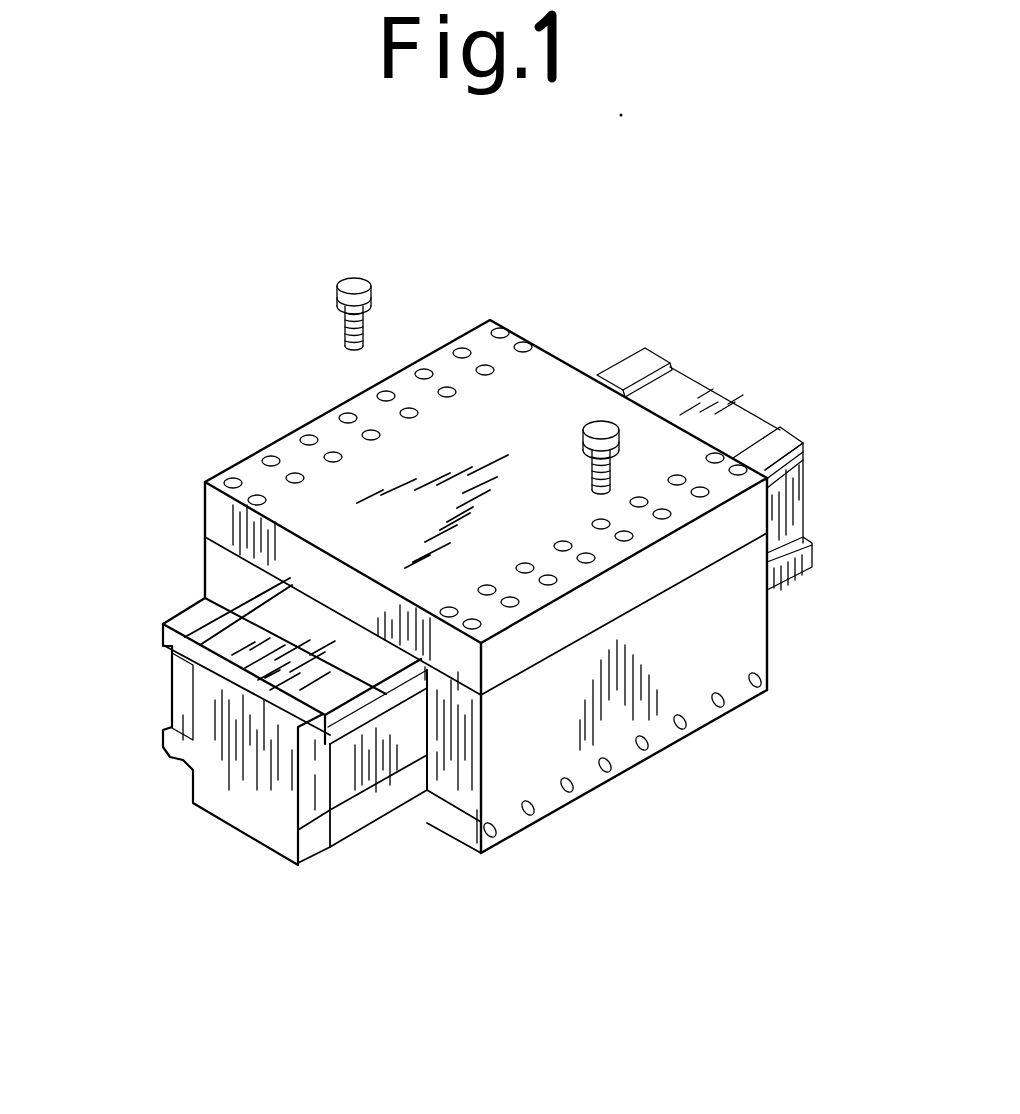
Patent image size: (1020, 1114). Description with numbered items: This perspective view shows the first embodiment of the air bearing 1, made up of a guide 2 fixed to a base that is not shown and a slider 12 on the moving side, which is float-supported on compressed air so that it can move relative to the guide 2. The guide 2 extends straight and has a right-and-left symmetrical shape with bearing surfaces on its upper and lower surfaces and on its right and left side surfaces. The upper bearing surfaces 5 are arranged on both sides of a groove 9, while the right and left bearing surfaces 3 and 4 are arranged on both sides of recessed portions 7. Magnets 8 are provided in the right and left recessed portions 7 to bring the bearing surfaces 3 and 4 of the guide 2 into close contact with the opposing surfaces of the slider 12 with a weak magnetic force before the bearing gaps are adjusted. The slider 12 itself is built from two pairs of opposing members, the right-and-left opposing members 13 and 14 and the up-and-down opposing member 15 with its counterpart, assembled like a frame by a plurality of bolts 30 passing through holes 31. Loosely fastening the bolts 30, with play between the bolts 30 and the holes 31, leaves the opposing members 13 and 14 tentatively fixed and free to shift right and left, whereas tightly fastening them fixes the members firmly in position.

The actuator 1 is at (773, 320).
The guide 2 is at (252, 838).
The bearing surface 3 is at (165, 638).
The bearing surface 4 is at (403, 697).
The upper bearing surfaces 5 is at (368, 684).
The recessed portions 7 is at (170, 653).
The magnets 8 is at (307, 763).
The groove 9 is at (278, 642).
The slider 12 is at (437, 349).
The opposing member 13 is at (248, 583).
The opposing member 14 is at (672, 683).
The opposing member 15 is at (523, 435).
The bolts 30 is at (348, 276).
The holes 31 is at (305, 430).